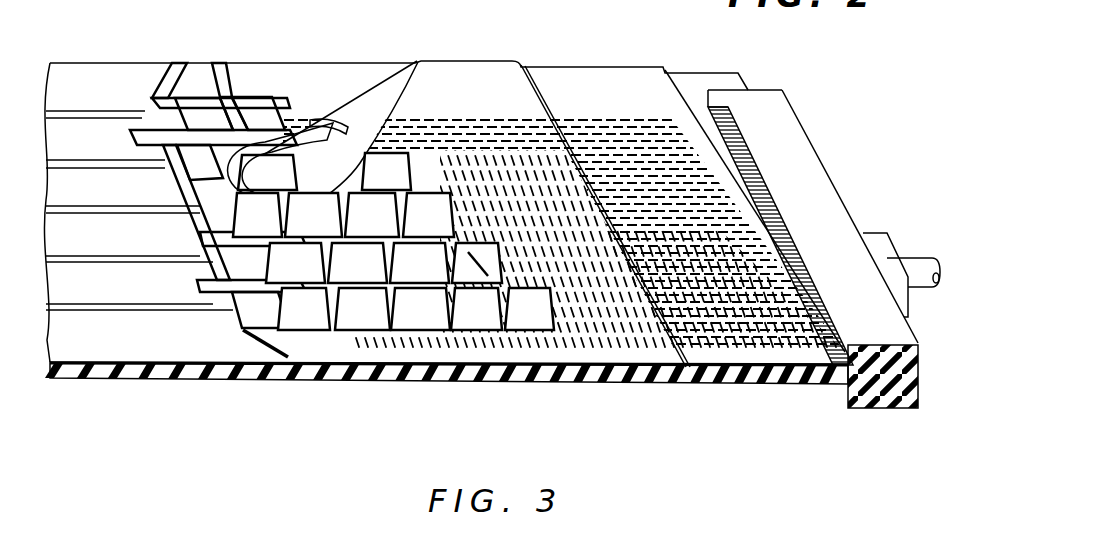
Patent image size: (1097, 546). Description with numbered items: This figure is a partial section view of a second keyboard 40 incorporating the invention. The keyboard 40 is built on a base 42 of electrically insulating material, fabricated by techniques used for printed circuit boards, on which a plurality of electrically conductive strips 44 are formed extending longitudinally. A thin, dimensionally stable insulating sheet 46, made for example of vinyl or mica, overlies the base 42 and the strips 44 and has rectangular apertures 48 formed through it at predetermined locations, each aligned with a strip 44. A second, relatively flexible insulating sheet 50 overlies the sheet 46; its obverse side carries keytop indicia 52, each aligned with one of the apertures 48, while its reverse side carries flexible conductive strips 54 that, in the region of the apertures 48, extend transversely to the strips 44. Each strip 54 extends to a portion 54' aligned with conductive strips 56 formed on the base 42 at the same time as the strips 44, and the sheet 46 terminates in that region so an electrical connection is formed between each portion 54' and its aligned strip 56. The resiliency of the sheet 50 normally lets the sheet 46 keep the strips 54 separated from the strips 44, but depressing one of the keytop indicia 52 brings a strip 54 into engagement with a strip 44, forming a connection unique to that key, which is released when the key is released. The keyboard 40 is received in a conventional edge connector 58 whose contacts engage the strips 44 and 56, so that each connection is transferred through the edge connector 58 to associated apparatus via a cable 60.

The keyboard 40 is at (132, 48).
The base 42 is at (226, 386).
The electrically conductive strips 44 is at (103, 117).
The sheet 46 is at (232, 72).
The rectangular apertures 48 is at (198, 102).
The sheet 50 is at (568, 83).
The keytop indicia 52 is at (402, 196).
The flexible conductive strips 54 is at (288, 134).
The portion of strip 54' is at (708, 413).
The conductive strips 56 is at (747, 181).
The edge connector 58 is at (830, 163).
The cable 60 is at (912, 257).